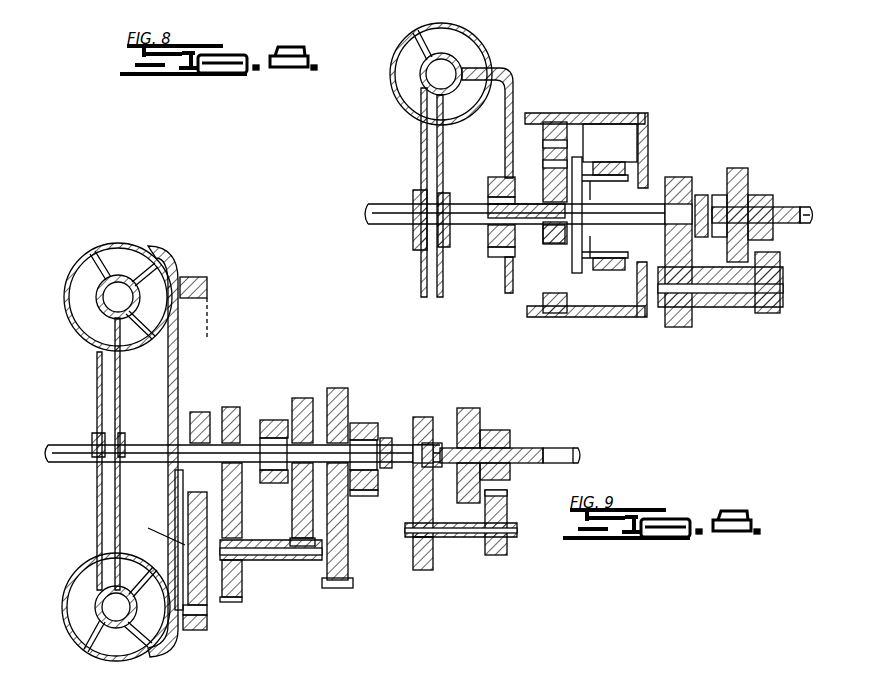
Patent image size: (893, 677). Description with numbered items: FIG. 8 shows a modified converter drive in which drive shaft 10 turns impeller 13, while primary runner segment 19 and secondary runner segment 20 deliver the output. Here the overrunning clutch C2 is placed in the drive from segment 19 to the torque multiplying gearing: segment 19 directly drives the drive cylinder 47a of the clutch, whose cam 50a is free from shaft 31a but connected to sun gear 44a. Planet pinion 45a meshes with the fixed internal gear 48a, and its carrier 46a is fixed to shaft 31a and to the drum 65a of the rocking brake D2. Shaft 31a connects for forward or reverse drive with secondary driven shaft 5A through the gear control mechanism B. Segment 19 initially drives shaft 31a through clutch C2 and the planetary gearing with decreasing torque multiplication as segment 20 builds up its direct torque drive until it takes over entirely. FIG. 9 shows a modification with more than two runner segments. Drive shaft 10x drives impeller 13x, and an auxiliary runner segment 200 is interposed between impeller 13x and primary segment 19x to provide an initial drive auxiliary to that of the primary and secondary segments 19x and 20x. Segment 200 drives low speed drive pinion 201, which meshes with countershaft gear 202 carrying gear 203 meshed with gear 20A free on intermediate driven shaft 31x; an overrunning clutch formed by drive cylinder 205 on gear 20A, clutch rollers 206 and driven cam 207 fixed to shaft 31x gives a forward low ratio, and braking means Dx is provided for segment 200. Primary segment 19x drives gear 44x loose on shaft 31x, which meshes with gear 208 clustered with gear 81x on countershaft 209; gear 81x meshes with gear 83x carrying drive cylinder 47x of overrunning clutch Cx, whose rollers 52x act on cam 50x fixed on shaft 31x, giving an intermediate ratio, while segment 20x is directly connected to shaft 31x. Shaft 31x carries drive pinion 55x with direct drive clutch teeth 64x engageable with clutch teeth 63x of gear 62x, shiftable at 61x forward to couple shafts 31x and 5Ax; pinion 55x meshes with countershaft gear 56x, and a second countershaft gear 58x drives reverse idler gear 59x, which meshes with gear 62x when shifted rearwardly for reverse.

In FIG. 8, the drive shaft 10 is at (385, 226).
In FIG. 8, the primary runner segment 19 is at (478, 52).
In FIG. 8, the impeller 13 is at (410, 86).
In FIG. 8, the secondary runner segment 20 is at (470, 95).
In FIG. 8, the drive cylinder 47a is at (490, 177).
In FIG. 8, the overrunning clutch C2 is at (488, 198).
In FIG. 8, the cam 50a is at (492, 236).
In FIG. 8, the shaft 31a is at (545, 240).
In FIG. 8, the fixed internal gear 48a is at (563, 113).
In FIG. 8, the planet pinion 45a is at (583, 160).
In FIG. 8, the sun gear 44a is at (582, 190).
In FIG. 8, the carrier 46a is at (596, 162).
In FIG. 8, the rocking brake D2 is at (640, 150).
In FIG. 8, the drum 65a is at (640, 168).
In FIG. 8, the gear control mechanism B is at (715, 178).
In FIG. 8, the secondary driven shaft 5A is at (800, 206).
In FIG. 9, the drive shaft 10x is at (70, 465).
In FIG. 9, the auxiliary runner segment 200 is at (128, 262).
In FIG. 9, the primary runner segment 19x is at (170, 285).
In FIG. 9, the impeller 13x is at (98, 325).
In FIG. 9, the secondary runner segment 20x is at (110, 352).
In FIG. 9, the braking means Dx is at (203, 633).
In FIG. 9, the gear 208 is at (207, 614).
In FIG. 9, the low speed drive pinion 201 is at (200, 412).
In FIG. 9, the gear 44x is at (232, 407).
In FIG. 9, the primary driven shaft 31x is at (242, 410).
In FIG. 9, the countershaft 209 is at (262, 565).
In FIG. 9, the clutch rollers 52x is at (268, 420).
In FIG. 9, the drive cylinder 47x is at (268, 470).
In FIG. 9, the cam 50x is at (265, 484).
In FIG. 9, the overrunning clutch Cx is at (300, 398).
In FIG. 9, the gear 83x is at (335, 388).
In FIG. 9, the gear 203 is at (340, 588).
In FIG. 9, the gear 81x is at (300, 588).
In FIG. 9, the gear 20A is at (360, 423).
In FIG. 9, the clutch rollers 206 is at (362, 492).
In FIG. 9, the drive cylinder 205 is at (386, 438).
In FIG. 9, the drive pinion 55x is at (425, 417).
In FIG. 9, the driven cam 207 is at (428, 443).
In FIG. 9, the direct drive clutch teeth 64x is at (470, 408).
In FIG. 9, the gear 62x is at (492, 430).
In FIG. 9, the clutch teeth 63x is at (508, 440).
In FIG. 9, the shift position 61x is at (512, 448).
In FIG. 9, the secondary driven shaft 5Ax is at (578, 450).
In FIG. 9, the reverse idler gear 59x is at (507, 498).
In FIG. 9, the second countershaft gear 58x is at (508, 552).
In FIG. 9, the countershaft gear 56x is at (425, 570).
In FIG. 9, the countershaft gear 202 is at (185, 545).